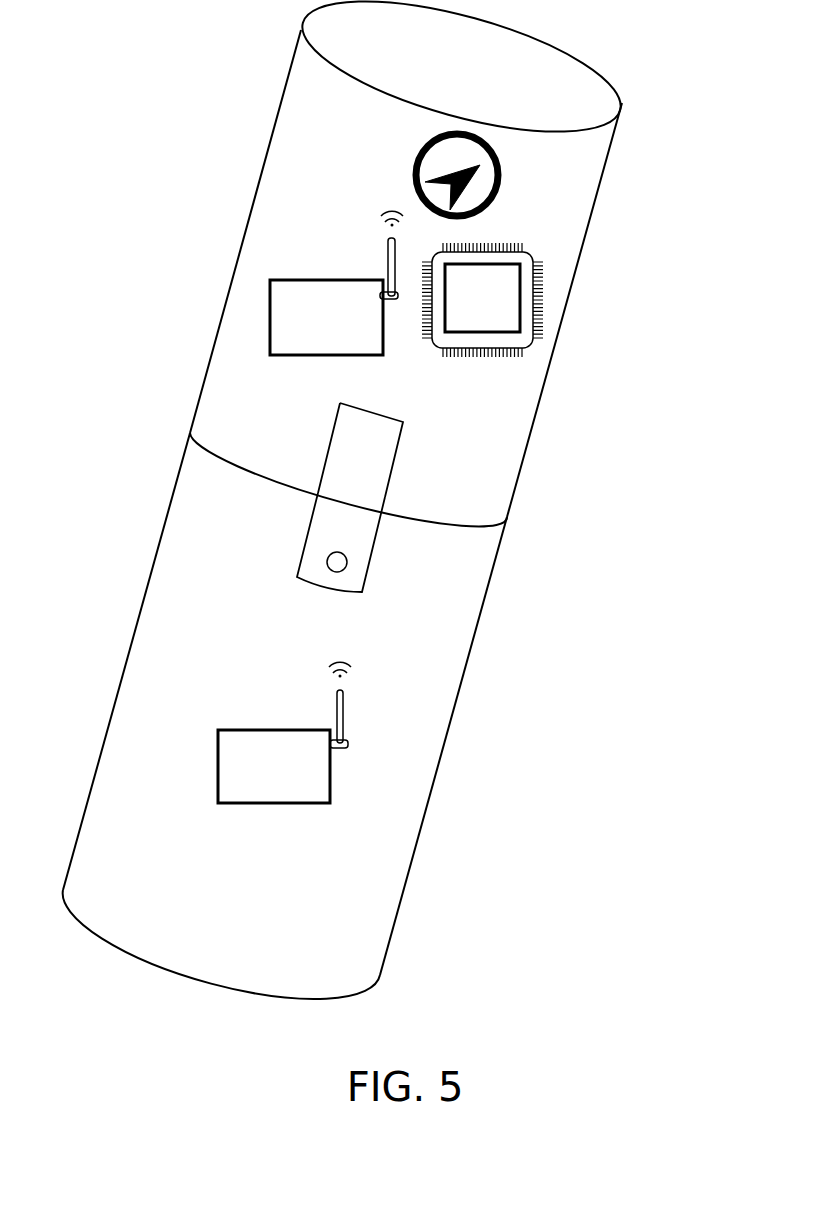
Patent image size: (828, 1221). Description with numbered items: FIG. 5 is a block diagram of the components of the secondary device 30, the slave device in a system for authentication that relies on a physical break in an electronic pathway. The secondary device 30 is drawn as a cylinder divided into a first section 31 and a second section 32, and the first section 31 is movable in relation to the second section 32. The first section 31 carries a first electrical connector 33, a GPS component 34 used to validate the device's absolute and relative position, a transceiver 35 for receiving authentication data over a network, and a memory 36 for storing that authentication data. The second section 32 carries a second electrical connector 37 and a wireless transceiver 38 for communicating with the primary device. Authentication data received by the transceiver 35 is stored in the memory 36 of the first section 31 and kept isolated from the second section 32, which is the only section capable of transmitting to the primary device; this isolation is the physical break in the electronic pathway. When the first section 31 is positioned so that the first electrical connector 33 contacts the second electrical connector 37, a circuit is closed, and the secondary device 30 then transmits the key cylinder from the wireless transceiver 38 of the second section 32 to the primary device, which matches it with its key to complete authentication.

The secondary device 30 is at (191, 169).
The first section 31 is at (574, 190).
The second section 32 is at (386, 850).
The first electrical connector 33 is at (377, 490).
The GPS component 34 is at (422, 148).
The transceiver 35 is at (292, 279).
The memory 36 is at (516, 248).
The second electrical connector 37 is at (362, 542).
The wireless transceiver 38 is at (242, 729).